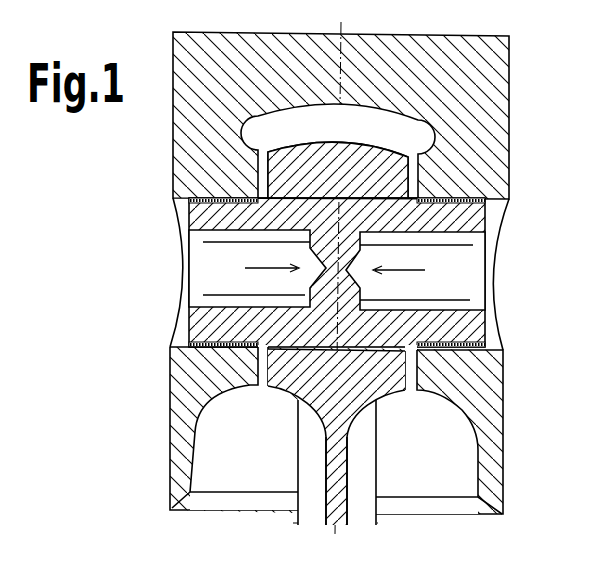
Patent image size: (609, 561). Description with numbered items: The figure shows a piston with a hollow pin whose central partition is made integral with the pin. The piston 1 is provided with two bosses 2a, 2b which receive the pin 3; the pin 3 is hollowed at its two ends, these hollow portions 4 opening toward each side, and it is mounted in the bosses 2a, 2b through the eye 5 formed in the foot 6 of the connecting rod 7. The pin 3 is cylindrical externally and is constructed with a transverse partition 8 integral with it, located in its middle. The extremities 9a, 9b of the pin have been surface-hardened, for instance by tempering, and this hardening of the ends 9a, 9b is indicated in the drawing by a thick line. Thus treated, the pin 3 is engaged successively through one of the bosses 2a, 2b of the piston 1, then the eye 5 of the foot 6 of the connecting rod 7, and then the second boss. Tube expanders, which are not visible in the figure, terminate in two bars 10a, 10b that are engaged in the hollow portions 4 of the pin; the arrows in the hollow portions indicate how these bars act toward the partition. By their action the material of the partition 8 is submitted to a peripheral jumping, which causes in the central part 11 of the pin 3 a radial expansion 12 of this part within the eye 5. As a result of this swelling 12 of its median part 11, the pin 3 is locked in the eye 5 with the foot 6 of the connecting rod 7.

The piston 1 is at (493, 60).
The boss 2a is at (190, 368).
The boss 2b is at (492, 378).
The pin 3 is at (222, 212).
The hollowed portions 4 is at (198, 237).
The eye 5 is at (275, 194).
The foot 6 is at (305, 385).
The connecting rod 7 is at (339, 503).
The transverse partition 8 is at (344, 293).
The extremity of the pin 9a is at (214, 342).
The extremity of the pin 9b is at (469, 345).
The bar 10a is at (233, 261).
The bar 10b is at (456, 262).
The central part 11 is at (351, 204).
The radial expansion 12 is at (335, 352).